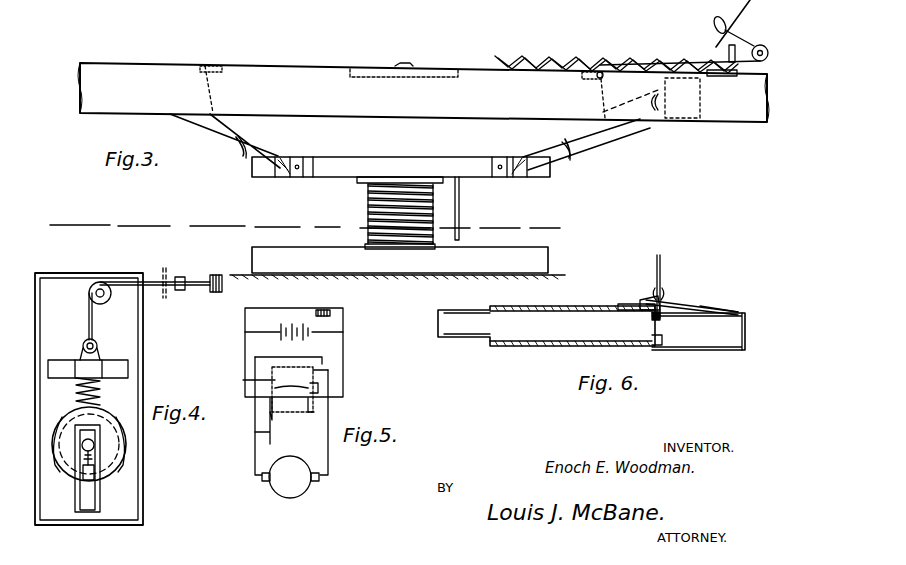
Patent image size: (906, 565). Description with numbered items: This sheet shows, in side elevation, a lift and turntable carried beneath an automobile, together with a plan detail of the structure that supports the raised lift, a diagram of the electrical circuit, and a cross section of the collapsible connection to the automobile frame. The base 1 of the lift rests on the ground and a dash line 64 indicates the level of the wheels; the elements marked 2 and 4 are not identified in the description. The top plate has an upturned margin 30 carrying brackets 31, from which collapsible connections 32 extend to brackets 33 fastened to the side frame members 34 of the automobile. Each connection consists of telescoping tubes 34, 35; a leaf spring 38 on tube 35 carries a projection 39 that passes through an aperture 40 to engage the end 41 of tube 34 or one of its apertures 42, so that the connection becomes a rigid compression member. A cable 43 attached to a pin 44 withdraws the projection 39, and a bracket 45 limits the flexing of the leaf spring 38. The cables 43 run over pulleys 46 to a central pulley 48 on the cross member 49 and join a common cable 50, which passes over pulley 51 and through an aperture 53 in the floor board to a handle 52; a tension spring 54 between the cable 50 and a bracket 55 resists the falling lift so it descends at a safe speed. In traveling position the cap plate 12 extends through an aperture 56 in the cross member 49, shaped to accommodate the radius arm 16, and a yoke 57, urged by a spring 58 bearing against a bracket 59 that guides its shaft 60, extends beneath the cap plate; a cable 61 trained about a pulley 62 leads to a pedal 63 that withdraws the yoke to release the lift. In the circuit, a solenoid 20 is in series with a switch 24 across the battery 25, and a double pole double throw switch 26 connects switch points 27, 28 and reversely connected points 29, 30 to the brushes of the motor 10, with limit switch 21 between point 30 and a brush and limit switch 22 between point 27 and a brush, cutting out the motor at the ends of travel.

In FIG. 3, the base 1 is at (506, 258).
In FIG. 3, the ground 2 is at (560, 278).
In FIG. 3, the spring 4 is at (368, 210).
In FIG. 5, the motor 10 is at (302, 492).
In FIG. 4, the cap plate 12 is at (106, 482).
In FIG. 3, the radius arm 16 is at (460, 208).
In FIG. 5, the solenoid 20 is at (324, 310).
In FIG. 5, the limit switch 21 is at (325, 358).
In FIG. 5, the limit switch 22 is at (274, 445).
In FIG. 5, the switch 24 is at (266, 310).
In FIG. 5, the battery 25 is at (294, 336).
In FIG. 5, the double pole double throw switch 26 is at (320, 380).
In FIG. 5, the switch point 27 is at (283, 415).
In FIG. 5, the switch point 28 is at (314, 415).
In FIG. 5, the switch point 29 is at (275, 380).
In FIG. 3, the upturned margin (also switch point) 30 is at (346, 160).
In FIG. 5, the upturned margin (also switch point) 30 is at (295, 389).
In FIG. 3, the brackets 31 is at (298, 158).
In FIG. 3, the collapsible connections 32 is at (258, 142).
In FIG. 3, the brackets 33 is at (702, 98).
In FIG. 3, the tube (also side frame member) 34 is at (556, 157).
In FIG. 6, the tube (also side frame member) 34 is at (456, 340).
In FIG. 3, the tube 35 is at (597, 137).
In FIG. 6, the tube 35 is at (712, 332).
In FIG. 6, the leaf spring 38 is at (680, 303).
In FIG. 6, the projection 39 is at (661, 320).
In FIG. 6, the aperture 40 is at (640, 304).
In FIG. 6, the end 41 is at (660, 340).
In FIG. 6, the apertures 42 is at (615, 312).
In FIG. 3, the cable 43 is at (214, 93).
In FIG. 6, the cable 43 is at (663, 262).
In FIG. 6, the pin 44 is at (662, 292).
In FIG. 6, the bracket 45 is at (712, 310).
In FIG. 3, the pulleys 46 is at (206, 66).
In FIG. 3, the central pulley 48 is at (402, 64).
In FIG. 3, the cross member 49 is at (450, 80).
In FIG. 4, the cross member 49 is at (143, 352).
In FIG. 3, the common cable 50 is at (612, 60).
In FIG. 3, the pulley 51 is at (769, 55).
In FIG. 3, the handle 52 is at (713, 26).
In FIG. 3, the aperture 53 is at (735, 32).
In FIG. 3, the tension spring 54 is at (535, 60).
In FIG. 3, the bracket 55 is at (742, 74).
In FIG. 4, the aperture 56 is at (70, 482).
In FIG. 4, the yoke 57 is at (108, 410).
In FIG. 4, the spring 58 is at (74, 400).
In FIG. 4, the bracket 59 is at (107, 362).
In FIG. 4, the shaft 60 is at (82, 352).
In FIG. 4, the cable 61 is at (88, 315).
In FIG. 4, the pulley 62 is at (100, 282).
In FIG. 4, the pedal 63 is at (194, 292).
In FIG. 3, the dash line 64 is at (170, 227).